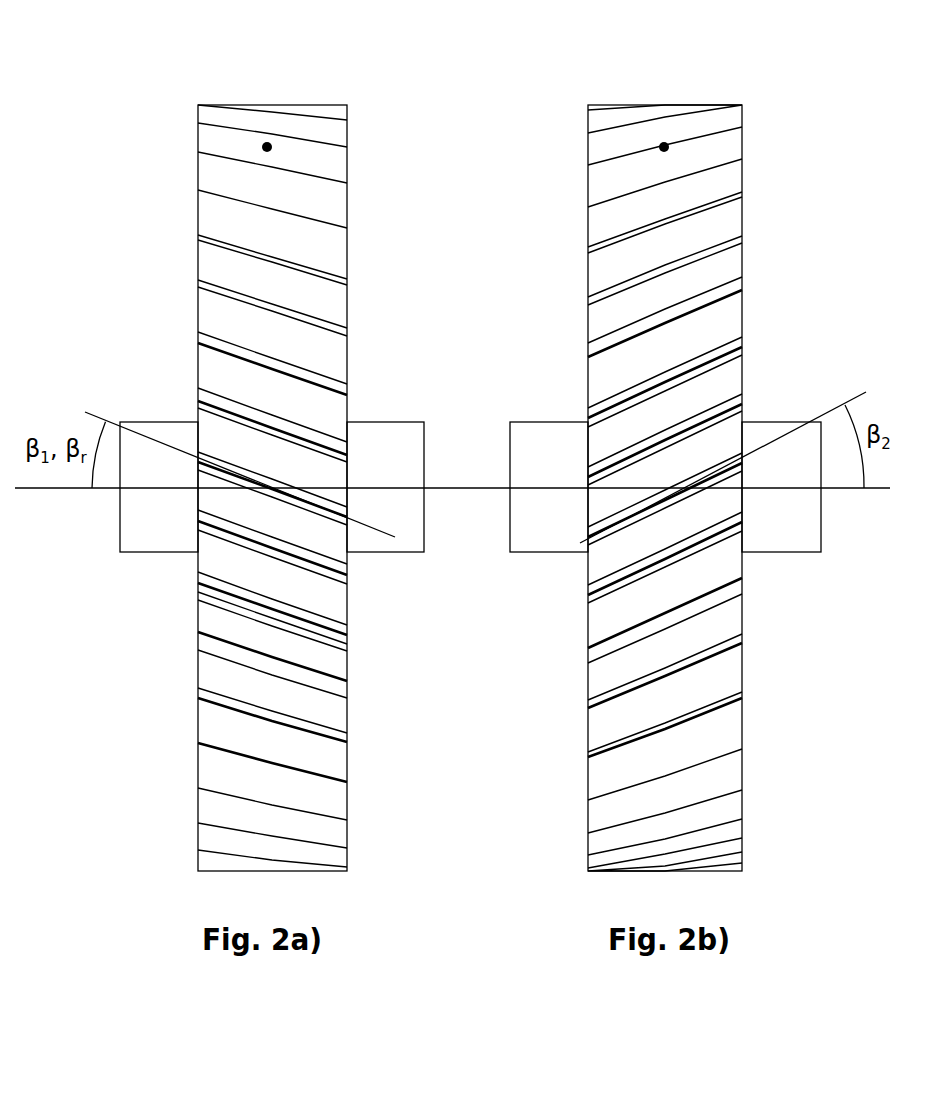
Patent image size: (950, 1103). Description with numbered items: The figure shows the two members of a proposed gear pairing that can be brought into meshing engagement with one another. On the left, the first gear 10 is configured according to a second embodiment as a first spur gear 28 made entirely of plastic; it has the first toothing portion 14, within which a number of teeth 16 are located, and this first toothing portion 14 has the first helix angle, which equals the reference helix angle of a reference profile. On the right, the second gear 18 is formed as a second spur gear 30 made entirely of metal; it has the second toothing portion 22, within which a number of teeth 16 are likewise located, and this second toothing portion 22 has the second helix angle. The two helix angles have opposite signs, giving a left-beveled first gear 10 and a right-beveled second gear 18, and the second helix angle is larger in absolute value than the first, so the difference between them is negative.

In FIG. 2A, the first gear 10 is at (210, 447).
In FIG. 2A, the first spur gear 28 is at (272, 450).
In FIG. 2A, the first toothing portion 14 is at (272, 406).
In FIG. 2A, the teeth 16 is at (267, 147).
In FIG. 2B, the teeth 16 is at (664, 147).
In FIG. 2B, the second gear 18 is at (599, 438).
In FIG. 2B, the second spur gear 30 is at (665, 451).
In FIG. 2B, the second toothing portion 22 is at (665, 394).